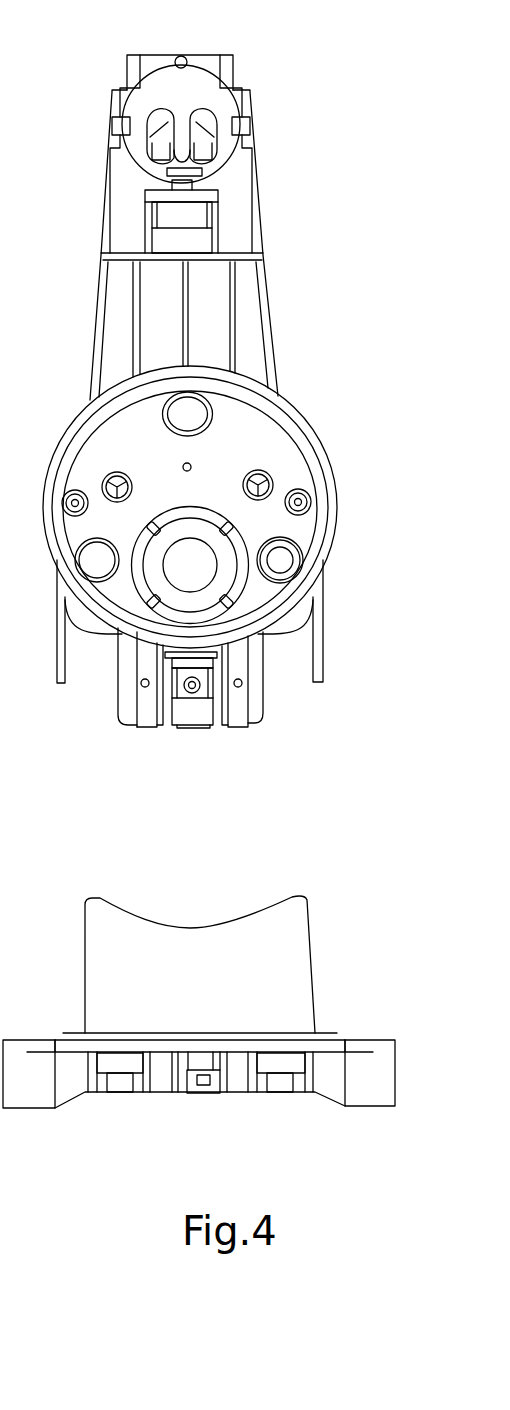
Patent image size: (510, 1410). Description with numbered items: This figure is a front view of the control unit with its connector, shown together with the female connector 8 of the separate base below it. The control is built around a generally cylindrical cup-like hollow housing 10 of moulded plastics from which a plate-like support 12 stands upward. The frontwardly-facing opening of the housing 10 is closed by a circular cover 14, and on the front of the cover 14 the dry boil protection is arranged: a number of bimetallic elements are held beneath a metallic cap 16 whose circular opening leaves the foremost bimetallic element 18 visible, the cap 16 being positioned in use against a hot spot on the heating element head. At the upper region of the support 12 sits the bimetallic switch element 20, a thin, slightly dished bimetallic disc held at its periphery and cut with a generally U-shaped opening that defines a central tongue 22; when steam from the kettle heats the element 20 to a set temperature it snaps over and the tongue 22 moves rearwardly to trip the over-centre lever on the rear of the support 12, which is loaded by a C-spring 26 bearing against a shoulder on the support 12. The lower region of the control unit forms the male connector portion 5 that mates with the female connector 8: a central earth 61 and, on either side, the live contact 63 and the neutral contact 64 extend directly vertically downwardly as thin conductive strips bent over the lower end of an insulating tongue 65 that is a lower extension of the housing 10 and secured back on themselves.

The male connector portion 5 is at (204, 718).
The female connector 8 is at (298, 937).
The housing 10 is at (316, 447).
The plate-like support 12 is at (262, 205).
The circular cover 14 is at (248, 435).
The metallic cap 16 is at (237, 547).
The foremost bimetallic element 18 is at (207, 572).
The bimetallic switch element 20 is at (208, 88).
The central tongue 22 is at (177, 110).
The C-spring 26 is at (168, 212).
The central earth 61 is at (193, 728).
The live contact 63 is at (145, 722).
The right terminal column 64 is at (238, 720).
The tongue 65 is at (130, 708).